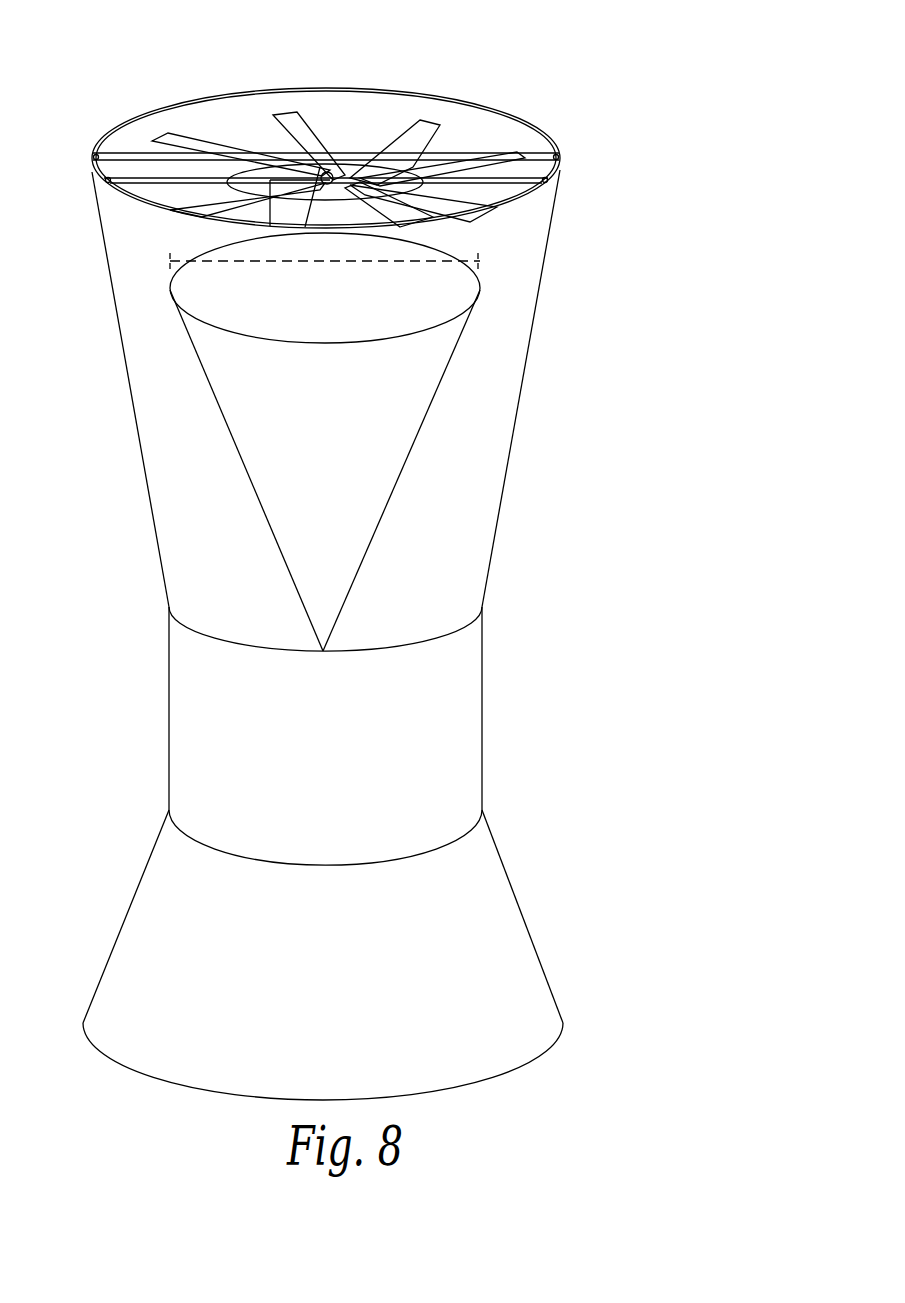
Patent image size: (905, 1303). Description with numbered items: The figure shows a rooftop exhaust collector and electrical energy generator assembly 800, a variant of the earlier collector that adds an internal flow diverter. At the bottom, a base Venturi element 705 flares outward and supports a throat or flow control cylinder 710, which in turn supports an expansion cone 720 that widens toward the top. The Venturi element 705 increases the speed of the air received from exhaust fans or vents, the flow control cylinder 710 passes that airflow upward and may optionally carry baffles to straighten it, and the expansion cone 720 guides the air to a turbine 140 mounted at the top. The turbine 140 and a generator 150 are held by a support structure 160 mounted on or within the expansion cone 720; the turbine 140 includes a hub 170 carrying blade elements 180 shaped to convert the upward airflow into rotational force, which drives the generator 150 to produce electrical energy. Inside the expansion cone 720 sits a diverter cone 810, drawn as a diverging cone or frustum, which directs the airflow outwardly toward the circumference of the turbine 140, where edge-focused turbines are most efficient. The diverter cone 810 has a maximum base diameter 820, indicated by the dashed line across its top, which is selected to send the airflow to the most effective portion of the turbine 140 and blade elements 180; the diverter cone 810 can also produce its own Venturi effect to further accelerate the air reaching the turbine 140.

The rooftop exhaust collector and electrical energy generator assembly 800 is at (73, 285).
The turbine 140 is at (230, 125).
The generator 150 is at (332, 177).
The support structure 160 is at (122, 155).
The hub 170 is at (407, 173).
The blade elements 180 is at (290, 132).
The base Venturi element 705 is at (508, 932).
The flow control cylinder 710 is at (467, 735).
The expansion cone 720 is at (502, 393).
The diverter cone 810 is at (275, 493).
The maximum base diameter 820 is at (305, 261).